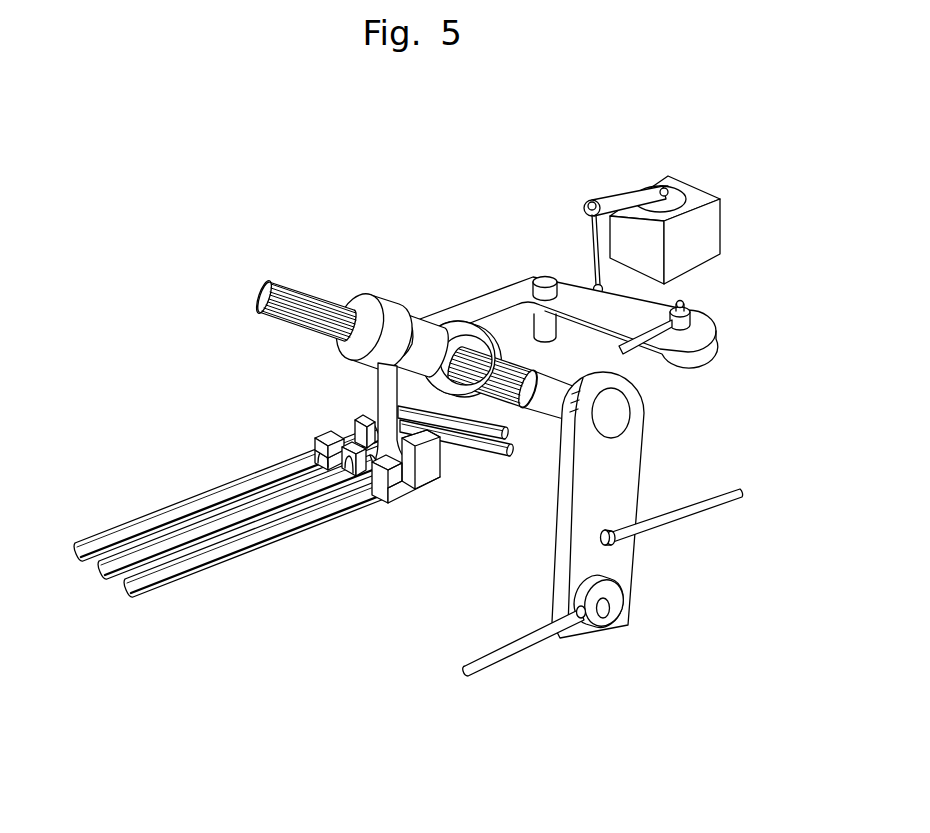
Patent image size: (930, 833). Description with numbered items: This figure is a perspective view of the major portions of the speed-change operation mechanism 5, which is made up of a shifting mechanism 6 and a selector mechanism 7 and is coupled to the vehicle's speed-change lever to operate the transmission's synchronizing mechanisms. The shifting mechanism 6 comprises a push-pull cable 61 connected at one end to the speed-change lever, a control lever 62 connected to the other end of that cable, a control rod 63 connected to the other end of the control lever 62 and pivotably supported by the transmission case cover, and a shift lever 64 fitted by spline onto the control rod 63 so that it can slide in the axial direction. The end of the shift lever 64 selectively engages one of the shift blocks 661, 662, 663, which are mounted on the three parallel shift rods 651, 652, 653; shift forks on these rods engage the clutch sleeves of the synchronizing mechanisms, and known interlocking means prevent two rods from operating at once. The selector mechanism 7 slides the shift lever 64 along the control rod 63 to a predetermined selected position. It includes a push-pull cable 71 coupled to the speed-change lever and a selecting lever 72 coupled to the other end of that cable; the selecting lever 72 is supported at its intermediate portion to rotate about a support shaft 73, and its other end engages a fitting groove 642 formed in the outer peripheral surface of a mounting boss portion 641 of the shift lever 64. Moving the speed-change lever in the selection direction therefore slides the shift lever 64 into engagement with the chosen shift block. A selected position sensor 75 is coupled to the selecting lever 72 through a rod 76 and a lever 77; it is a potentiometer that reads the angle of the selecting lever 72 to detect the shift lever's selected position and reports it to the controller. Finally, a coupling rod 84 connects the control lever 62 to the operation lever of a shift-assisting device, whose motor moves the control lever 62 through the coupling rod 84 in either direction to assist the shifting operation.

The speed-change operation mechanism 5 is at (308, 185).
The shifting mechanism 6 is at (640, 660).
The selector mechanism 7 is at (462, 235).
The push-pull cable 61 is at (498, 662).
The control lever 62 is at (620, 565).
The control rod 63 is at (553, 412).
The shift lever 64 is at (378, 396).
The mounting boss portion 641 is at (365, 303).
The fitting groove 642 is at (402, 338).
The shift rod 651 is at (168, 520).
The shift rod 652 is at (133, 556).
The shift rod 653 is at (191, 549).
The shift block 661 is at (322, 437).
The shift block 662 is at (318, 452).
The shift block 663 is at (396, 488).
The push-pull cable 71 is at (633, 352).
The selecting lever 72 is at (652, 307).
The support shaft 73 is at (545, 276).
The selected position sensor (SES) 75 is at (697, 190).
The rod 76 is at (590, 250).
The lever 77 is at (606, 200).
The coupling rod 84 is at (707, 490).